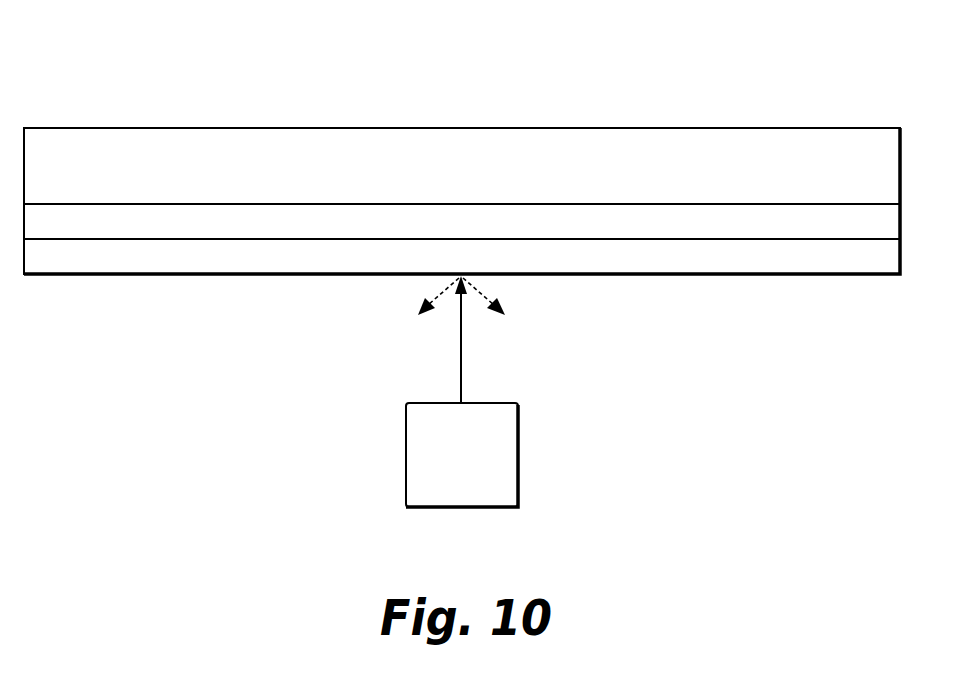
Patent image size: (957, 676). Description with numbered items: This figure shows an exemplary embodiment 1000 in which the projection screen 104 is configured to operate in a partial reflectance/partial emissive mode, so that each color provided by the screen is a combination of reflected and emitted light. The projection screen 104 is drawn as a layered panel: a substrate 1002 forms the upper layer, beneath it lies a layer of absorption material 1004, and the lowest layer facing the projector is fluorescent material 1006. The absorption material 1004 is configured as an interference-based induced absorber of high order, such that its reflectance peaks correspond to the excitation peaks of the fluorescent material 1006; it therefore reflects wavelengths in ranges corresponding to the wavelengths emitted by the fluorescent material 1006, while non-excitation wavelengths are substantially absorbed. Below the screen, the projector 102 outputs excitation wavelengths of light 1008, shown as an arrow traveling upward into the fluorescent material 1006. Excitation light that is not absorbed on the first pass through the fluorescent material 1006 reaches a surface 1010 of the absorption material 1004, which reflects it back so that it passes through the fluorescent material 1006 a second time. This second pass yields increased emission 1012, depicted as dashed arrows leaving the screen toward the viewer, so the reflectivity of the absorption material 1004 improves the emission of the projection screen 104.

The exemplary embodiment 1000 is at (227, 44).
The projection screen 104 is at (460, 127).
The substrate 1002 is at (462, 166).
The absorption material 1004 is at (462, 221).
The fluorescent material 1006 is at (462, 256).
The surface of the absorption material 1010 is at (283, 237).
The projector 102 is at (462, 455).
The excitation wavelengths of light 1008 is at (460, 367).
The increased emission 1012 is at (428, 310).